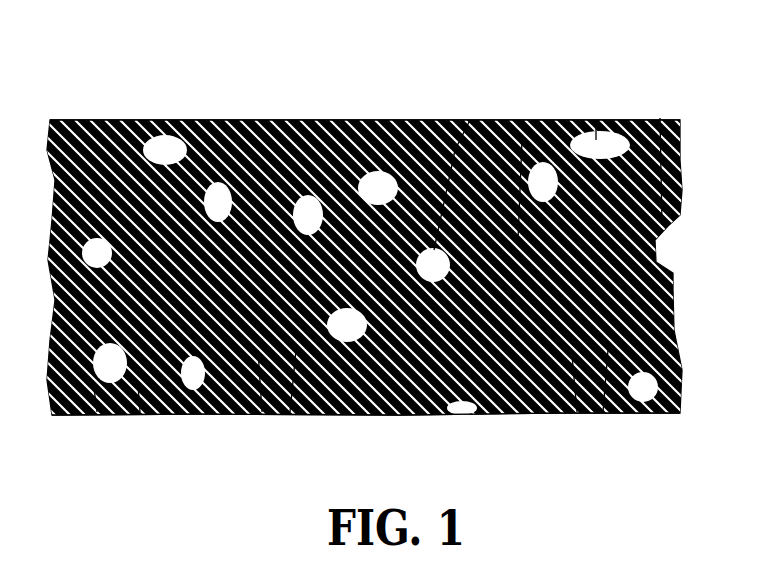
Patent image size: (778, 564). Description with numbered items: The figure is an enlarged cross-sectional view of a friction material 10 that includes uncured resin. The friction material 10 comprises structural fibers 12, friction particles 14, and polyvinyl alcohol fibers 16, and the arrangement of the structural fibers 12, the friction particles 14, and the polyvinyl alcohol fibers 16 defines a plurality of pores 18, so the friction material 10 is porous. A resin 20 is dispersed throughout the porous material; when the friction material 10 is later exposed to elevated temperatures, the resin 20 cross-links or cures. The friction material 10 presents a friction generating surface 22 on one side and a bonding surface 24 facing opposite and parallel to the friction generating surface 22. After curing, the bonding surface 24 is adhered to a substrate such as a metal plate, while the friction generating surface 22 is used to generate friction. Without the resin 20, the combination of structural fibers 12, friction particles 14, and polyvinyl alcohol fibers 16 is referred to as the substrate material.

The friction material 10 is at (389, 284).
The structural fibers 12 is at (522, 140).
The friction particles 14 is at (290, 412).
The polyvinyl alcohol fibers 16 is at (603, 412).
The pores 18 is at (660, 118).
The resin 20 is at (140, 412).
The friction generating surface 22 is at (392, 114).
The bonding surface 24 is at (542, 421).